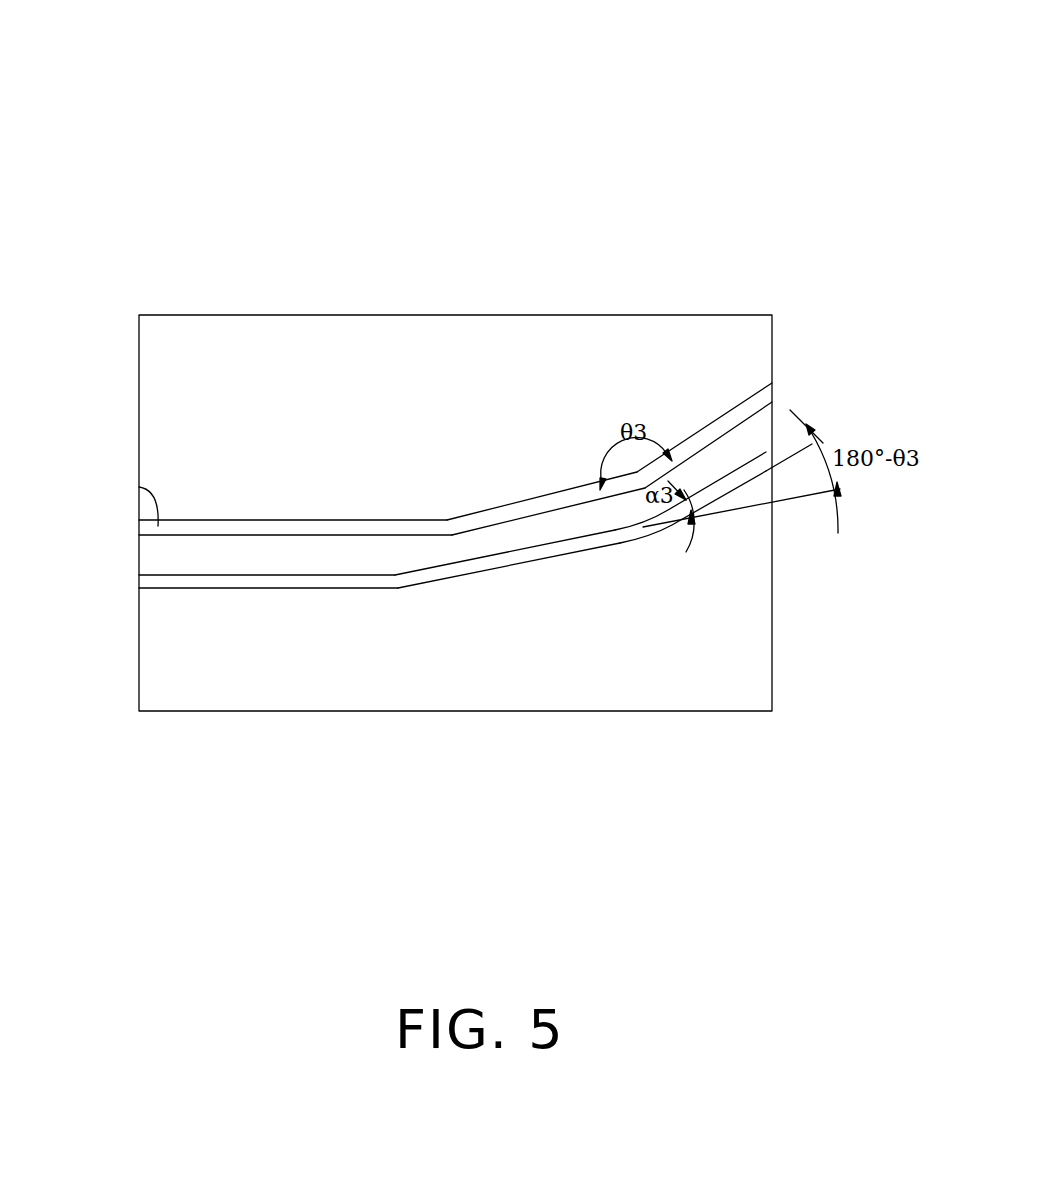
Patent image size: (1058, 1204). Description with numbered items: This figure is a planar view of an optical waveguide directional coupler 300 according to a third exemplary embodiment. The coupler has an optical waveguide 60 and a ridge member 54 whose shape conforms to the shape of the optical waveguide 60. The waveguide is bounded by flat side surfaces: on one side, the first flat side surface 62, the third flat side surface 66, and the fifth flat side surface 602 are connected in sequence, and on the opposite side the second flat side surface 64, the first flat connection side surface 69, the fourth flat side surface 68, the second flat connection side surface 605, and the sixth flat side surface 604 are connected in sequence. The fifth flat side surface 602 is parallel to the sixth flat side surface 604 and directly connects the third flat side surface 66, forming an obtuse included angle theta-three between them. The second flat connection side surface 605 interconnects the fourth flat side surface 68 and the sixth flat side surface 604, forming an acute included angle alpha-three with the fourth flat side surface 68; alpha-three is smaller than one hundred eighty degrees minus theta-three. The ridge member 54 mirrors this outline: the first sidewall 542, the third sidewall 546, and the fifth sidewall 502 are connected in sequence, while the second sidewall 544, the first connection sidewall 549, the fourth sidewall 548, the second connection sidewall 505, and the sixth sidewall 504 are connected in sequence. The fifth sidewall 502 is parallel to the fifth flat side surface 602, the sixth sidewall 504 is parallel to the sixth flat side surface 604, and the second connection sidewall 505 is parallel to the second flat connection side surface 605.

The optical waveguide directional coupler 300 is at (388, 68).
The ridge member 54 is at (139, 487).
The optical waveguide 60 is at (165, 557).
The first flat side surface 62 is at (293, 535).
The second flat side surface 64 is at (295, 575).
The third flat side surface 66 is at (545, 510).
The fourth flat side surface 68 is at (574, 546).
The first flat connection side surface 69 is at (450, 573).
The fifth sidewall 502 is at (742, 467).
The sixth sidewall 504 is at (758, 458).
The second connection sidewall 505 is at (697, 496).
The first sidewall 542 is at (343, 520).
The second sidewall 544 is at (330, 588).
The third sidewall 546 is at (490, 509).
The fourth sidewall 548 is at (603, 550).
The first connection sidewall 549 is at (498, 585).
The fifth flat side surface 602 is at (710, 503).
The sixth flat side surface 604 is at (746, 404).
The second flat connection side surface 605 is at (668, 452).